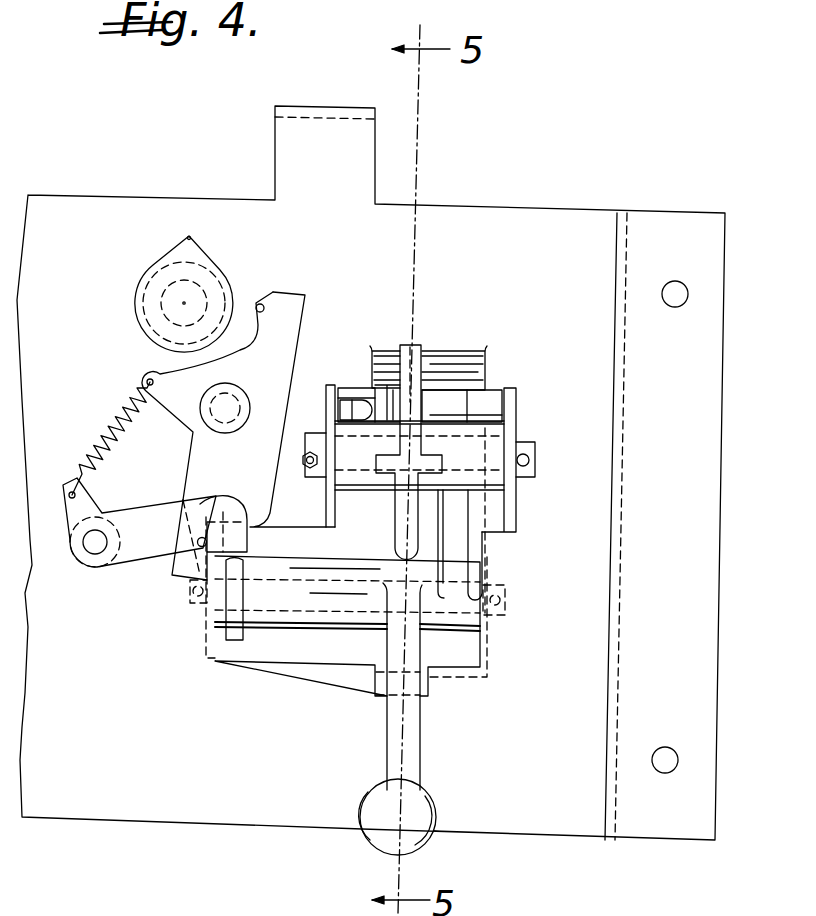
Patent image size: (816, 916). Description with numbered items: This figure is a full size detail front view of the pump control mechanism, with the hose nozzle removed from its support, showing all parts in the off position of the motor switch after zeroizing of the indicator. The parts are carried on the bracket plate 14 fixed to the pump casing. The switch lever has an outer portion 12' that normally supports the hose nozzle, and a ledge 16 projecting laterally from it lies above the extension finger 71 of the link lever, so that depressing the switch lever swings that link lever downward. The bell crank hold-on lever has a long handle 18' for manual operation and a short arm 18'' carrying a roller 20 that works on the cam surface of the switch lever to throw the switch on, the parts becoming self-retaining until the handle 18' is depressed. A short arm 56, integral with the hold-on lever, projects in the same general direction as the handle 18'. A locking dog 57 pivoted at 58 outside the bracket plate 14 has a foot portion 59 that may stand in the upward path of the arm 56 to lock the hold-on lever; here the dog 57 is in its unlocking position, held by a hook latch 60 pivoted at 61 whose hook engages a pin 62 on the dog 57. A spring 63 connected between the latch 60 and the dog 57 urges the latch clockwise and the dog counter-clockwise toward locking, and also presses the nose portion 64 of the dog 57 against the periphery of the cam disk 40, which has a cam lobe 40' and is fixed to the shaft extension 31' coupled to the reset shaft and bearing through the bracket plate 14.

The bracket plate 14 is at (537, 219).
The cam disk 40 is at (157, 294).
The cam lobe 40' is at (155, 235).
The shaft extension 31' is at (146, 310).
The nose portion 64 is at (259, 304).
The locking dog 57 is at (206, 458).
The pivot 58 is at (226, 414).
The spring 63 is at (127, 418).
The hook latch 60 is at (150, 499).
The pivot shaft 61 is at (86, 548).
The pin 62 is at (220, 495).
The foot portion 59 is at (180, 563).
The short arm 56 is at (233, 627).
The ledge 16 is at (352, 389).
The extension finger 71 is at (350, 409).
The roller 20 is at (463, 412).
The outer portion of switch lever 12' is at (394, 452).
The short arm of hold-on lever 18'' is at (493, 520).
The handle 18' is at (416, 719).